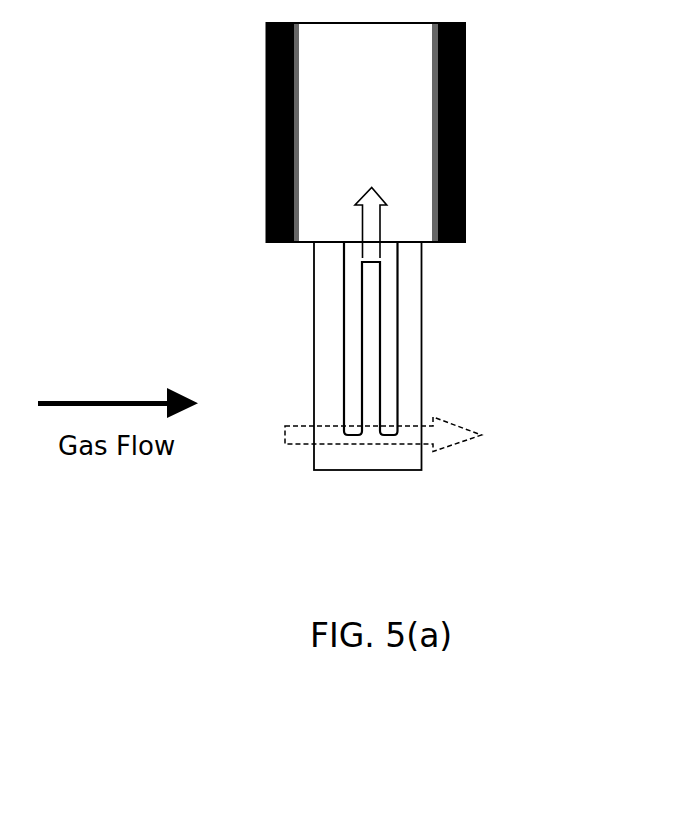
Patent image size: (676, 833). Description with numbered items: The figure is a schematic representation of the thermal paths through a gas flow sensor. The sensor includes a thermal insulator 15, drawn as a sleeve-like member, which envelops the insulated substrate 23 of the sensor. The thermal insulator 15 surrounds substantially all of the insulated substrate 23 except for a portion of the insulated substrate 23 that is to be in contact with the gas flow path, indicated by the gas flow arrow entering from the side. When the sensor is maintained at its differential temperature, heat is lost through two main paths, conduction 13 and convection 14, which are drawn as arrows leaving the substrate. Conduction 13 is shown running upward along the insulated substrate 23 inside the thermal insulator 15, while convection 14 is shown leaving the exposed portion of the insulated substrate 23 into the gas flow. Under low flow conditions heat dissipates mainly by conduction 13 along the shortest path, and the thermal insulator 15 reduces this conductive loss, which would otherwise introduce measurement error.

The conduction 13 is at (358, 224).
The convection 14 is at (445, 436).
The thermal insulator 15 is at (446, 155).
The insulated substrate 23 is at (321, 348).